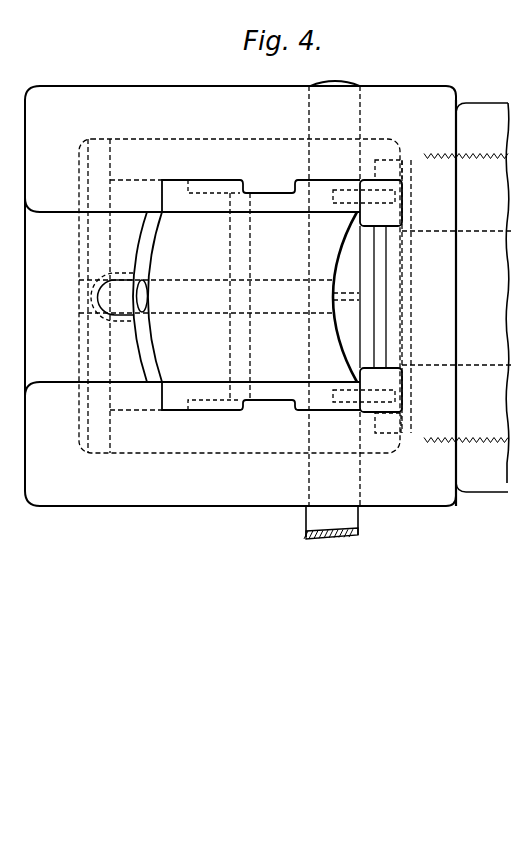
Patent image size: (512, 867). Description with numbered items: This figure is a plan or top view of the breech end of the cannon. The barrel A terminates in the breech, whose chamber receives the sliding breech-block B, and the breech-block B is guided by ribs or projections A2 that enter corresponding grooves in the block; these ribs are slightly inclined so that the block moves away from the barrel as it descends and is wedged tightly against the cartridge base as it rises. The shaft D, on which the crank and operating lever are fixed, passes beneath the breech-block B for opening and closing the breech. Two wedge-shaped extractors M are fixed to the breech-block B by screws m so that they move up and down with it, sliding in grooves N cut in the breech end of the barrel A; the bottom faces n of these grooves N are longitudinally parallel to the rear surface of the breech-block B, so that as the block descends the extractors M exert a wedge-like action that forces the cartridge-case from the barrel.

The barrel A is at (466, 303).
The ribs or projections A2 is at (261, 299).
The breech-block B is at (224, 297).
The shaft D is at (332, 310).
The extractors M is at (381, 296).
The grooves N is at (388, 297).
The screws m is at (417, 393).
The bottom faces n is at (417, 405).